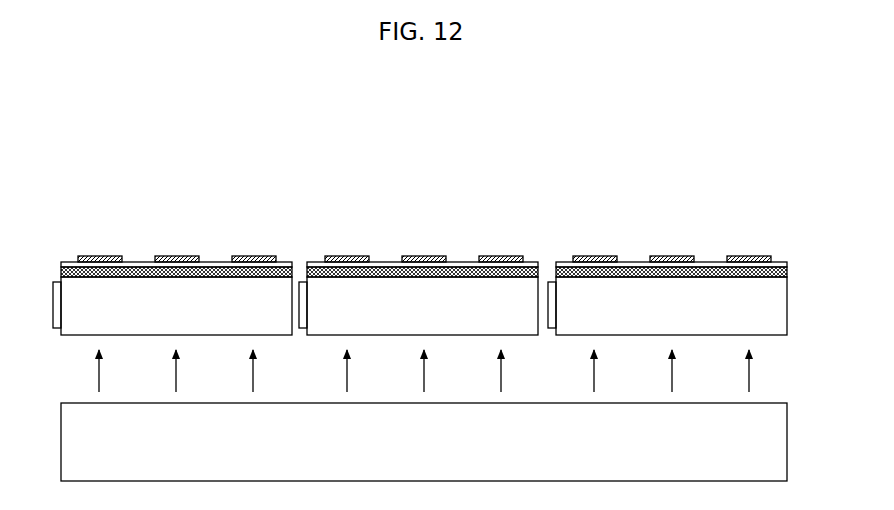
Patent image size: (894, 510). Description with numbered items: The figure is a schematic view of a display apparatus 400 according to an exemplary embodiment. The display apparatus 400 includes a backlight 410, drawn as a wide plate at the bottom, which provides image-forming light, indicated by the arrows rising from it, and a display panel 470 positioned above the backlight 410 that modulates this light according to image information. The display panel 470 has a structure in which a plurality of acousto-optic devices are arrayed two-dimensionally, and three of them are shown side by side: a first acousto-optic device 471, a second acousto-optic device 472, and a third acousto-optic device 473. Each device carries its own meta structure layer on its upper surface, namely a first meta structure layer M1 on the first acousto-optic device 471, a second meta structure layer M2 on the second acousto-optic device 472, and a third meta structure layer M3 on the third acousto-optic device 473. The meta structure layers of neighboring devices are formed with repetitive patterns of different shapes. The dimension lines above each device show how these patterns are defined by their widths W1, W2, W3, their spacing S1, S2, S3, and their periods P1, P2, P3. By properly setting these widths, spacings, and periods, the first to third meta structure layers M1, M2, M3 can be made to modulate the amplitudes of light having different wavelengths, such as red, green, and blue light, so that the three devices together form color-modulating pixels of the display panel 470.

The display apparatus 400 is at (738, 153).
The backlight 410 is at (778, 447).
The display panel 470 is at (829, 253).
The first acousto-optic device 471 is at (257, 240).
The second acousto-optic device 472 is at (503, 242).
The third acousto-optic device 473 is at (752, 240).
The first meta structure layer M1 is at (59, 258).
The second meta structure layer M2 is at (543, 267).
The third meta structure layer M3 is at (789, 258).
The period of pattern of first meta structure layer P1 is at (155, 255).
The period of pattern of second meta structure layer P2 is at (402, 255).
The period of pattern of third meta structure layer P3 is at (650, 255).
The width of pattern of first meta structure layer W1 is at (122, 255).
The width of pattern of second meta structure layer W2 is at (369, 255).
The width of pattern of third meta structure layer W3 is at (617, 255).
The spacing of pattern of first meta structure layer S1 is at (154, 230).
The spacing of pattern of second meta structure layer S2 is at (370, 230).
The spacing of pattern of third meta structure layer S3 is at (618, 230).